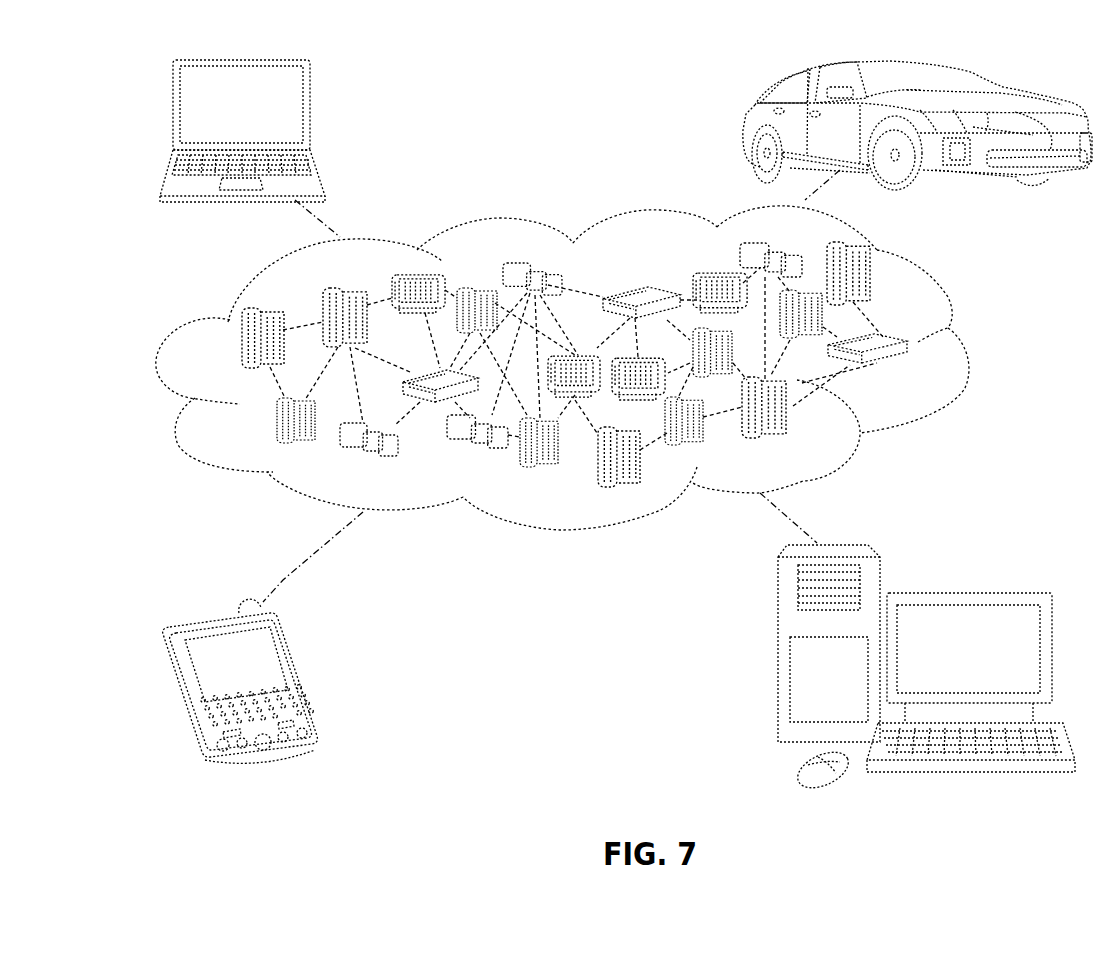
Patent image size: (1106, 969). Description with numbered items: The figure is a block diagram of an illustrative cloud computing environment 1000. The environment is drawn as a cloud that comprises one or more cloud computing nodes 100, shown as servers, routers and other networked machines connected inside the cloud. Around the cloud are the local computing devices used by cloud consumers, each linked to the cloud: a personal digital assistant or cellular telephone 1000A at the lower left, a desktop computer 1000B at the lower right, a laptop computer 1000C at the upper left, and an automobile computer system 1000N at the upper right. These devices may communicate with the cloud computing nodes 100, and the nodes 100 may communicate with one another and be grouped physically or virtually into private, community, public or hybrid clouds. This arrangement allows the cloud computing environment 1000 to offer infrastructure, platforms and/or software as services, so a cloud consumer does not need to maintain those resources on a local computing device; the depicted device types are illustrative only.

The cloud computing nodes 100 is at (915, 374).
The cloud computing environment 1000 is at (963, 342).
The personal digital assistant (PDA) or cellular telephone 1000A is at (297, 677).
The desktop computer 1000B is at (967, 593).
The laptop computer 1000C is at (312, 110).
The automobile computer system 1000N is at (745, 124).